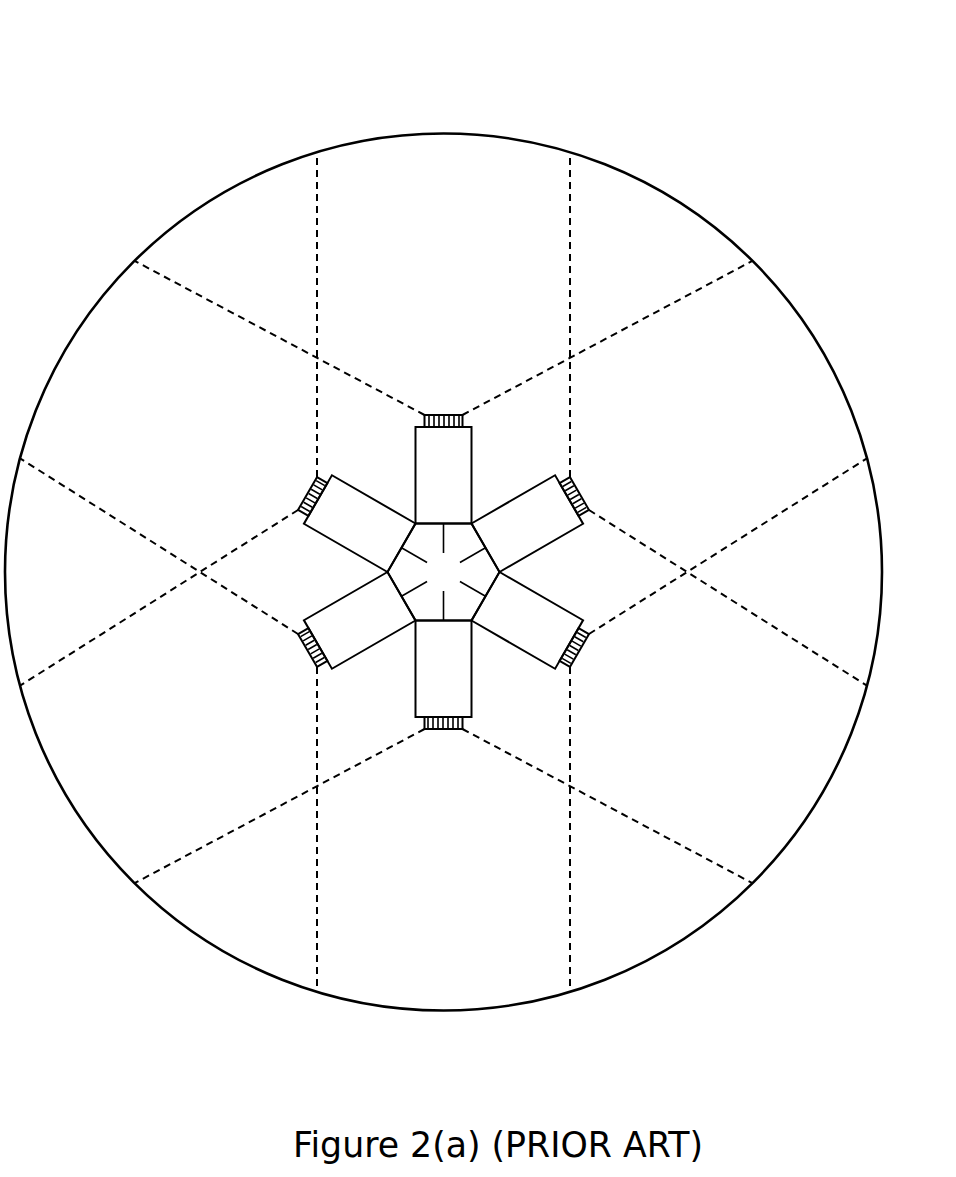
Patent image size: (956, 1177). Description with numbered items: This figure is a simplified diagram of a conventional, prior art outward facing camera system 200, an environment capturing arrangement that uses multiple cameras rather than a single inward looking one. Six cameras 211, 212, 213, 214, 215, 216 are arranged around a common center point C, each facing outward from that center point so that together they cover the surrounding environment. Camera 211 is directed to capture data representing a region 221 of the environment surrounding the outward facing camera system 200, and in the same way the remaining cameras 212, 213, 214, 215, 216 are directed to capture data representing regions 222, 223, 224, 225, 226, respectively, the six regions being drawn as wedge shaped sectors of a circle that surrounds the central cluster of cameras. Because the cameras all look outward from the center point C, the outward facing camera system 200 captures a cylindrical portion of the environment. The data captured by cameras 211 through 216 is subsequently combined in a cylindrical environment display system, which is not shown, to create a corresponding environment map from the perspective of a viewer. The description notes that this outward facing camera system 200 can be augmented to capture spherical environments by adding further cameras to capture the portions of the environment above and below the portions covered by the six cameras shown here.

The outward facing camera system 200 is at (413, 100).
The center point C is at (444, 572).
The camera 211 is at (424, 445).
The camera 212 is at (520, 527).
The camera 213 is at (520, 615).
The camera 214 is at (444, 660).
The camera 215 is at (368, 615).
The camera 216 is at (368, 527).
The region 221 is at (471, 303).
The region 222 is at (718, 438).
The region 223 is at (718, 708).
The region 224 is at (486, 805).
The region 225 is at (225, 709).
The region 226 is at (223, 464).